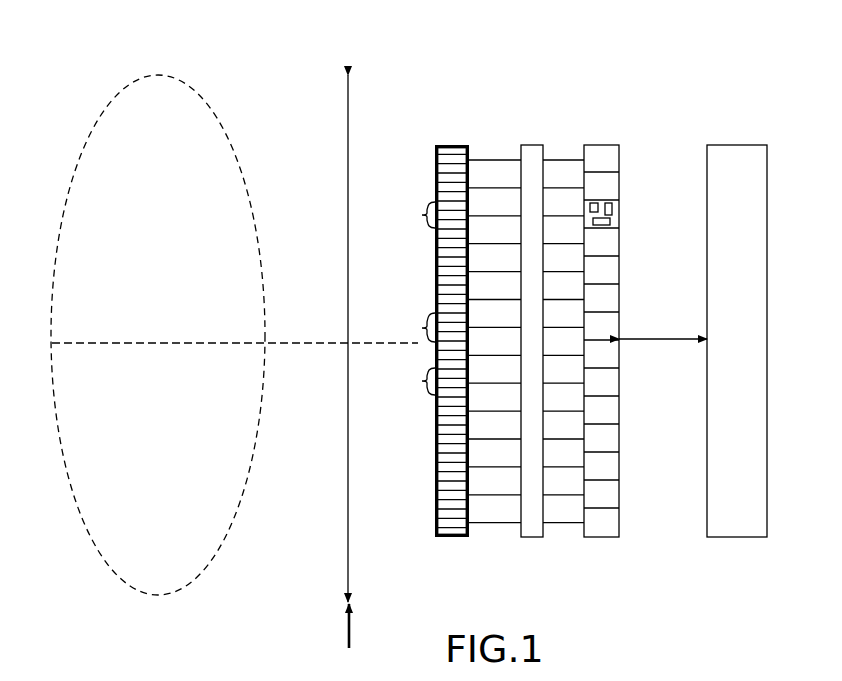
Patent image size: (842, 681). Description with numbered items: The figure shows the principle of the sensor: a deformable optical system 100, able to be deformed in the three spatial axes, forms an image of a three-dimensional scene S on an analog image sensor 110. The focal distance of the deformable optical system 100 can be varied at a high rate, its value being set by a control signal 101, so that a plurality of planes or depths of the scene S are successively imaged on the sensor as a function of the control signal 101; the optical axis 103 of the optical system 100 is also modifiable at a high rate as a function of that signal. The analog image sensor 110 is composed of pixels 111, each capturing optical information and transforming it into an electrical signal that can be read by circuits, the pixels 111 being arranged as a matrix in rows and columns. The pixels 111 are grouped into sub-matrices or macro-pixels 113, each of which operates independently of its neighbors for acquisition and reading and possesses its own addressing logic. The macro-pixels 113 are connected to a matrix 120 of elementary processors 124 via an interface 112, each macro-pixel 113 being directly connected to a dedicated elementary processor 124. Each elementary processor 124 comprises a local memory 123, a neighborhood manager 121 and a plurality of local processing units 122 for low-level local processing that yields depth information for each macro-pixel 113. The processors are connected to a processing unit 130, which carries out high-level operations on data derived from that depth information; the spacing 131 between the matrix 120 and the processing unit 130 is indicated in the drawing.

The three-dimensional scene S is at (155, 75).
The deformable optical system 100 is at (351, 82).
The control signal 101 is at (348, 628).
The optical axis 103 is at (295, 341).
The analog image sensor 110 is at (453, 145).
The pixels 111 is at (435, 160).
The interface 112 is at (532, 145).
The macro-pixels 113 is at (422, 215).
The matrix of elementary processors 120 is at (603, 145).
The neighborhood manager 121 is at (595, 203).
The local processing units 122 is at (612, 208).
The local memory 123 is at (610, 222).
The elementary processors 124 is at (614, 216).
The processing unit 130 is at (736, 145).
The gap distance 131 is at (658, 343).